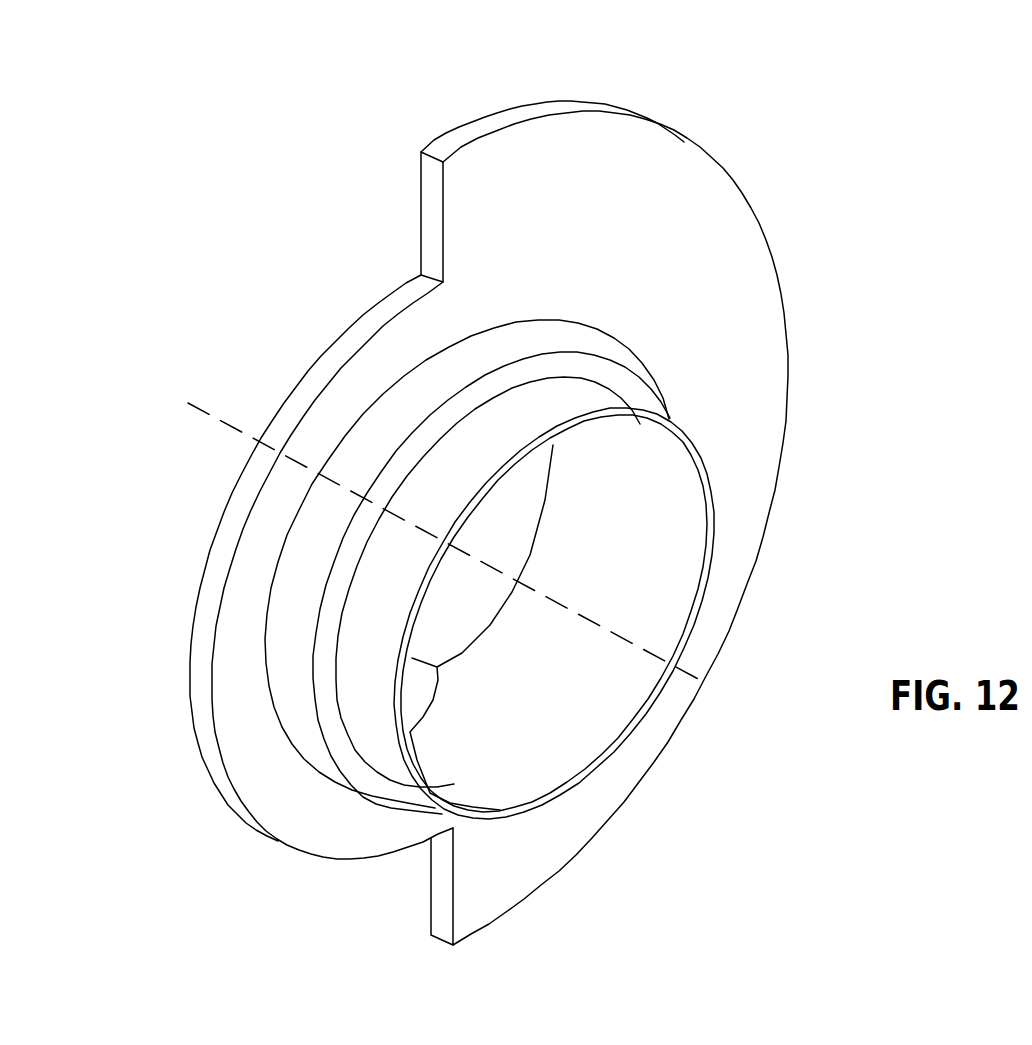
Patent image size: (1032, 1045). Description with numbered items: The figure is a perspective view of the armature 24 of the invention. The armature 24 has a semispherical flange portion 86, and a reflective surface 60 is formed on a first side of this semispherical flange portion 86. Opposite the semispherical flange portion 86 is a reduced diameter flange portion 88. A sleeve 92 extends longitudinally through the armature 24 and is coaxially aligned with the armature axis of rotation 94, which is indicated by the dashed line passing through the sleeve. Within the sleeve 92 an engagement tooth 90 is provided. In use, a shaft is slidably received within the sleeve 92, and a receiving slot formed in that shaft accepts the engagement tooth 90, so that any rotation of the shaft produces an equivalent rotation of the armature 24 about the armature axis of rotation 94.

The armature 24 is at (841, 118).
The reflective surface 60 is at (556, 172).
The semispherical flange portion 86 is at (432, 212).
The reduced diameter flange portion 88 is at (298, 403).
The engagement tooth 90 is at (412, 698).
The sleeve 92 is at (578, 790).
The armature axis of rotation 94 is at (206, 418).